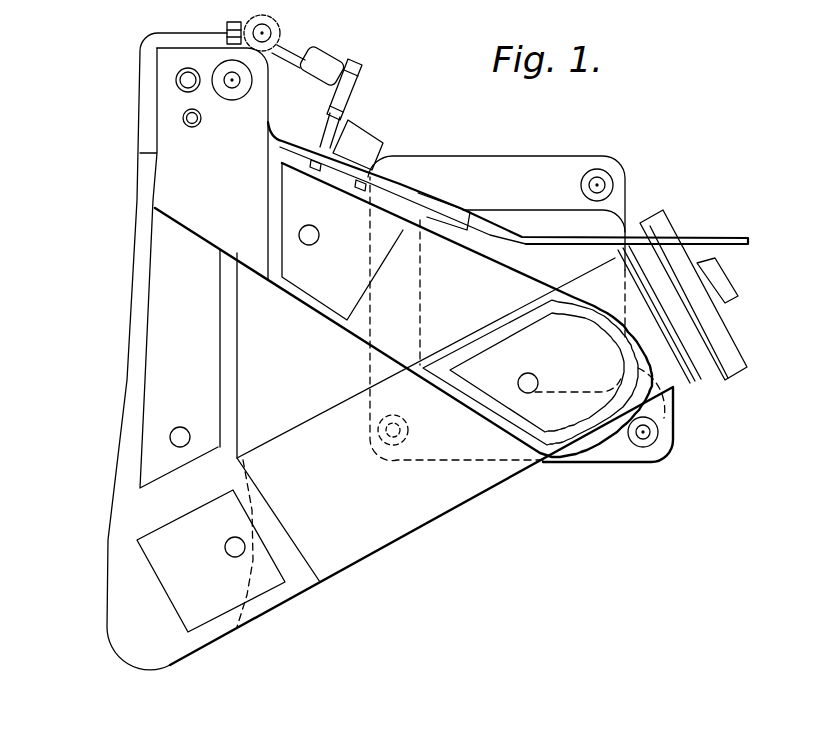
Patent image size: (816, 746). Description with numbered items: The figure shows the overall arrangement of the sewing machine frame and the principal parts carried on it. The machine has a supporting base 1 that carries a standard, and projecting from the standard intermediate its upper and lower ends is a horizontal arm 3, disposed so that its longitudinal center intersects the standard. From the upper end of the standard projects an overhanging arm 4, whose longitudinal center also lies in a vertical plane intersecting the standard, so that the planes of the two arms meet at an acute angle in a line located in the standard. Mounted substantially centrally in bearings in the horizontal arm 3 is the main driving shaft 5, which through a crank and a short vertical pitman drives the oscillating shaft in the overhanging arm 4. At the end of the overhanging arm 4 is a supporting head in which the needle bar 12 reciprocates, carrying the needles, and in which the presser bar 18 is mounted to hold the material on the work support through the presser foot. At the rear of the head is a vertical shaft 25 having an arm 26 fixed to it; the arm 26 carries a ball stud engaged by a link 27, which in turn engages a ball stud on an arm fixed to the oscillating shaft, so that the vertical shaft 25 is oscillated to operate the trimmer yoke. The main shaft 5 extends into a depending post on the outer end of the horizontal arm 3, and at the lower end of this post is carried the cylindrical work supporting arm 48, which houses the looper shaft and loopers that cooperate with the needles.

The supporting base 1 is at (617, 199).
The horizontal arm 3 is at (403, 526).
The overhanging arm 4 is at (320, 308).
The main driving shaft 5 is at (675, 322).
The needle bar 12 is at (188, 120).
The presser bar 18 is at (185, 83).
The vertical shaft 25 is at (264, 33).
The arm 26 is at (298, 52).
The link 27 is at (345, 95).
The work supporting arm 48 is at (137, 252).